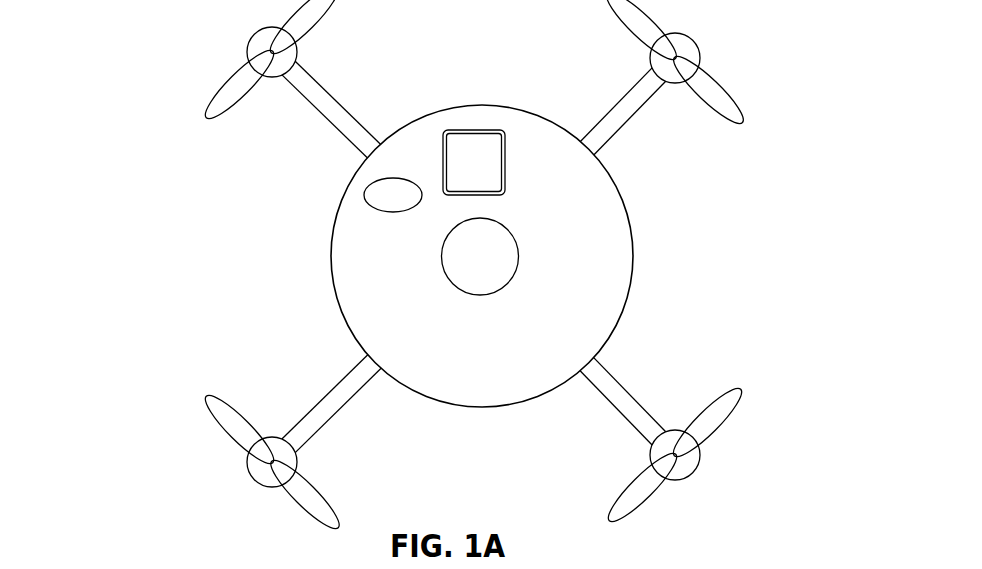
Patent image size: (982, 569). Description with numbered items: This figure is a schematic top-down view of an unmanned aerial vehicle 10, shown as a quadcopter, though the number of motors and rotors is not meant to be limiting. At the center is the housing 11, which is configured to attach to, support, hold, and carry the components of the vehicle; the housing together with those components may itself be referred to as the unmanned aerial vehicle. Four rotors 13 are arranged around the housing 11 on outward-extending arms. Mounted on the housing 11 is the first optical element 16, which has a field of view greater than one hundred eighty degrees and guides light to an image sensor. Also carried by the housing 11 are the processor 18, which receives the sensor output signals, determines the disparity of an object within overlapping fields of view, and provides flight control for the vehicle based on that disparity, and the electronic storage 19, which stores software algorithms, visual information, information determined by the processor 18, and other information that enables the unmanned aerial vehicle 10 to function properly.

The unmanned aerial vehicle 10 is at (451, 268).
The housing 11 is at (480, 380).
The rotors 13 is at (708, 427).
The first optical element 16 is at (482, 263).
The processor 18 is at (468, 163).
The electronic storage 19 is at (397, 195).